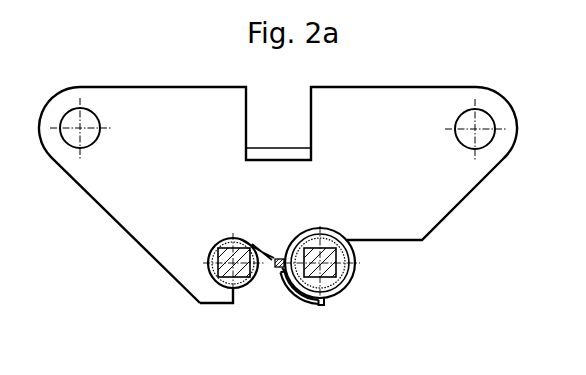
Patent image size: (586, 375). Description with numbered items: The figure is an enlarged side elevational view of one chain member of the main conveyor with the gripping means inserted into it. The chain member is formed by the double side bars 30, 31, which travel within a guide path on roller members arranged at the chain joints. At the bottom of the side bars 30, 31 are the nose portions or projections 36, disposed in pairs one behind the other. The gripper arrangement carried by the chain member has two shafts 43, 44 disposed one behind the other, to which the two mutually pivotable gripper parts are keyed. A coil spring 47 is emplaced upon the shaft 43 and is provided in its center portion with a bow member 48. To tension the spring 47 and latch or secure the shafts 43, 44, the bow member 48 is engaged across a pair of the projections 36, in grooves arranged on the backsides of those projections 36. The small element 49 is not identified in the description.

The side bar 30 is at (278, 195).
The side bar 31 is at (449, 196).
The nose portions or projections 36 is at (208, 295).
The shaft 43 is at (337, 290).
The shaft 44 is at (242, 295).
The coil spring 47 is at (353, 268).
The bow member 48 is at (272, 268).
The bolt 49 is at (279, 257).